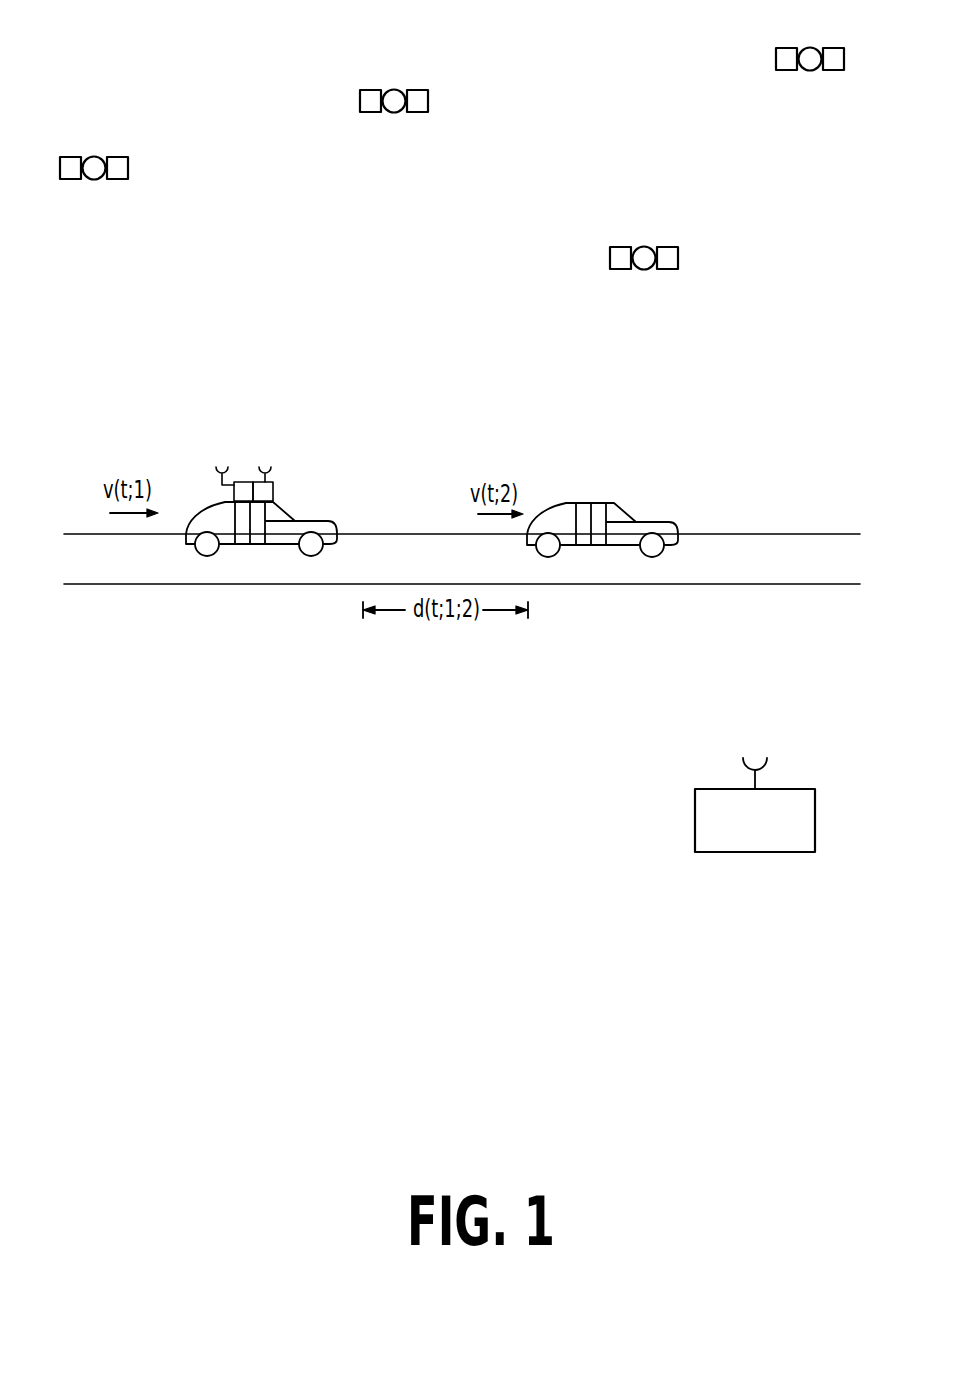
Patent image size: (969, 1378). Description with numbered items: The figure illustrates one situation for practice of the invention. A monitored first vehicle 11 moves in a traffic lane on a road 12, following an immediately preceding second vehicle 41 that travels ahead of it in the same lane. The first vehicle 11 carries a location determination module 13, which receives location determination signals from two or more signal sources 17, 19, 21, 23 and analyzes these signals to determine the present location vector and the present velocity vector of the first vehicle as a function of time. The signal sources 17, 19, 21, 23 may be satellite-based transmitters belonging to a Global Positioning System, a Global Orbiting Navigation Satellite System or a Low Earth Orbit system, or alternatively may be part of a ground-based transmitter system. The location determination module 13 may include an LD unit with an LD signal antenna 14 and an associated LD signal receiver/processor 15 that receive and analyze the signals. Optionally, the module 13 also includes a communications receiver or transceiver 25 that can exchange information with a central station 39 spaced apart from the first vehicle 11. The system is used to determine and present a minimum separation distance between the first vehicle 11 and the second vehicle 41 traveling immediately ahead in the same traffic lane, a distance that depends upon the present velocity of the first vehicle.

The first vehicle 11 is at (220, 518).
The road 12 is at (129, 564).
The location determination module 13 is at (282, 441).
The LD signal antenna 14 is at (260, 487).
The LD signal receiver/processor 15 is at (260, 492).
The LD signal source 17 is at (96, 161).
The LD signal source 19 is at (396, 92).
The LD signal source 21 is at (647, 249).
The LD signal source 23 is at (813, 50).
The communications receiver or transceiver 25 is at (242, 485).
The central station 39 is at (725, 832).
The second vehicle 41 is at (584, 512).